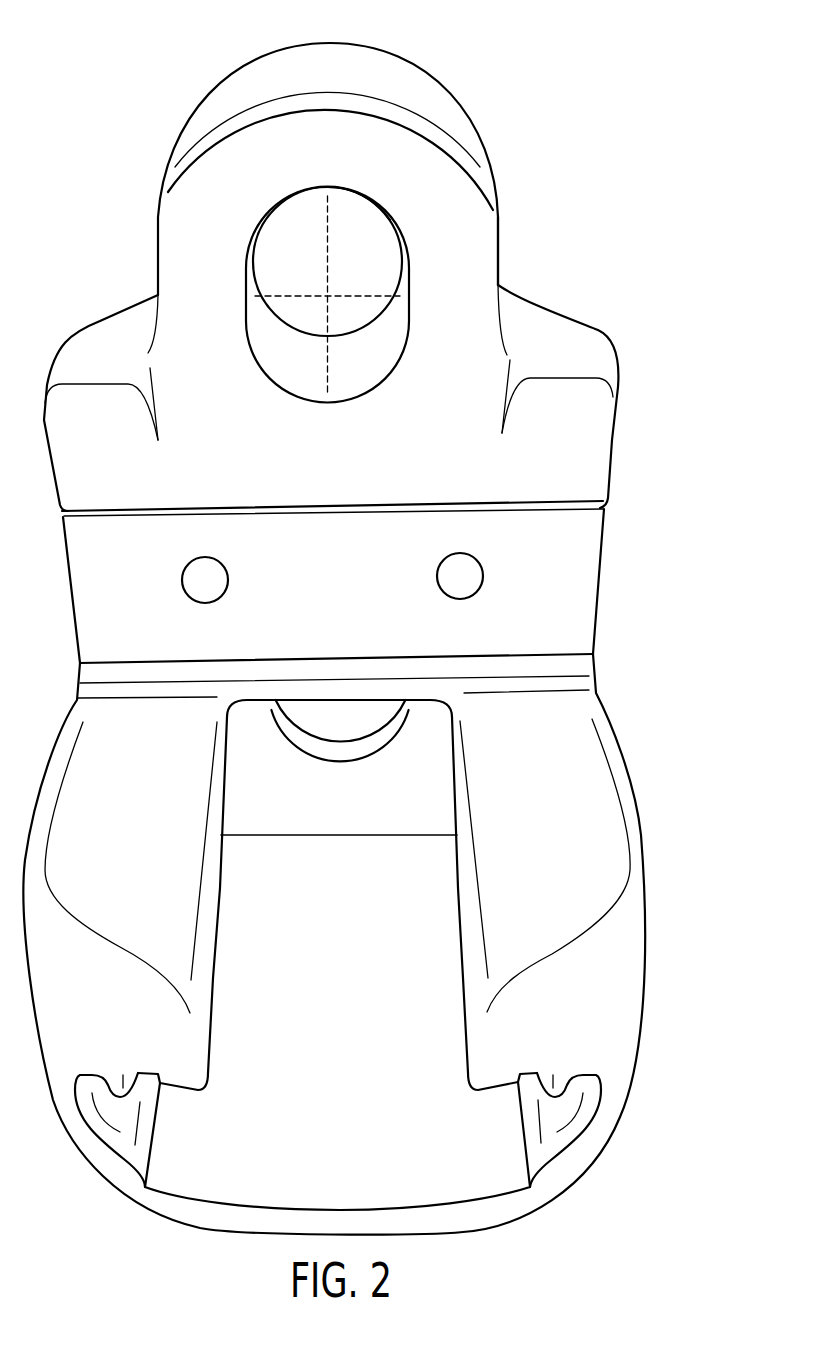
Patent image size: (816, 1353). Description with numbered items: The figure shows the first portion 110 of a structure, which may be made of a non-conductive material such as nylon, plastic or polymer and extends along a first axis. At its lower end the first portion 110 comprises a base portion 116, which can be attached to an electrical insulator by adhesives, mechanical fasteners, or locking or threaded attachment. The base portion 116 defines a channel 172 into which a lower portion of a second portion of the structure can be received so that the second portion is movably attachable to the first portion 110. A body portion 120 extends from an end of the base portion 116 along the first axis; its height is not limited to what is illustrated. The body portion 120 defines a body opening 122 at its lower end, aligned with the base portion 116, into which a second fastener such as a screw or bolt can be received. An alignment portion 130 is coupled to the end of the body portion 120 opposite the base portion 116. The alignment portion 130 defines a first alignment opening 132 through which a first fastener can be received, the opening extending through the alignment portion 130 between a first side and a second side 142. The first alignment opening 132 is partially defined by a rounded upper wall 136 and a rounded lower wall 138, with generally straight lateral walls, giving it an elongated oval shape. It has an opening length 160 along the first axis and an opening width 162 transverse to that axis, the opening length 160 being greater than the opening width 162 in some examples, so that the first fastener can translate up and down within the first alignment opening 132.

The first portion 110 is at (102, 64).
The base portion 116 is at (633, 942).
The body portion 120 is at (585, 556).
The body opening 122 is at (333, 747).
The alignment portion 130 is at (457, 110).
The first alignment opening 132 is at (295, 200).
The upper wall 136 is at (362, 193).
The lower wall 138 is at (387, 377).
The second side 142 is at (477, 208).
The opening length 160 is at (328, 250).
The opening width 162 is at (296, 293).
The channel 172 is at (415, 1163).